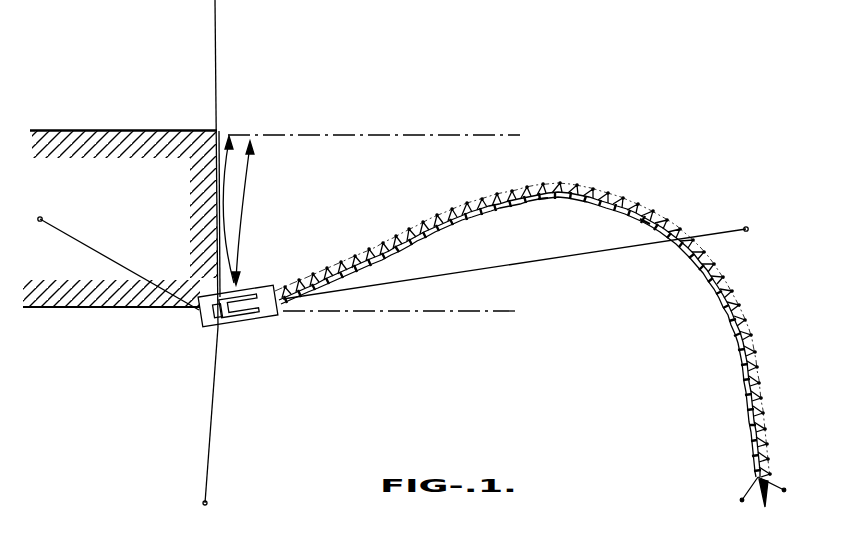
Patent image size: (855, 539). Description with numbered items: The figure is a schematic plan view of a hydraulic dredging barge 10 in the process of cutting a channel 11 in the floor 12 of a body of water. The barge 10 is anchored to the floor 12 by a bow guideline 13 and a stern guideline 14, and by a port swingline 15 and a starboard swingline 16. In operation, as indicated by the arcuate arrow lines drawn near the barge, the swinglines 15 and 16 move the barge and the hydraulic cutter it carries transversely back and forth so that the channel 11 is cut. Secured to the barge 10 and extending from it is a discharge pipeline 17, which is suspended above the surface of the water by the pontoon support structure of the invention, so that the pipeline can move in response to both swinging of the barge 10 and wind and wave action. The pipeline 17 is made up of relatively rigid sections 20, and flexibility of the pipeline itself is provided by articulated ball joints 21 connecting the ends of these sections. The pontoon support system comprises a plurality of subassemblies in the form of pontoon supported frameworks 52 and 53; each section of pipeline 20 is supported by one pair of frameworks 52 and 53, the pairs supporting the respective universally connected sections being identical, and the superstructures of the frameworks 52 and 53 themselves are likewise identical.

The hydraulic dredging barge 10 is at (257, 288).
The channel 11 is at (320, 136).
The floor 12 is at (390, 358).
The bow guideline 13 is at (552, 261).
The stern guideline 14 is at (93, 251).
The port swingline 15 is at (216, 72).
The starboard swingline 16 is at (211, 430).
The discharge pipeline 17 is at (433, 238).
The rigid pipeline sections 20 is at (540, 193).
The articulated ball joints 21 is at (524, 191).
The pontoon supported framework 52 is at (526, 206).
The pontoon supported framework 53 is at (545, 205).